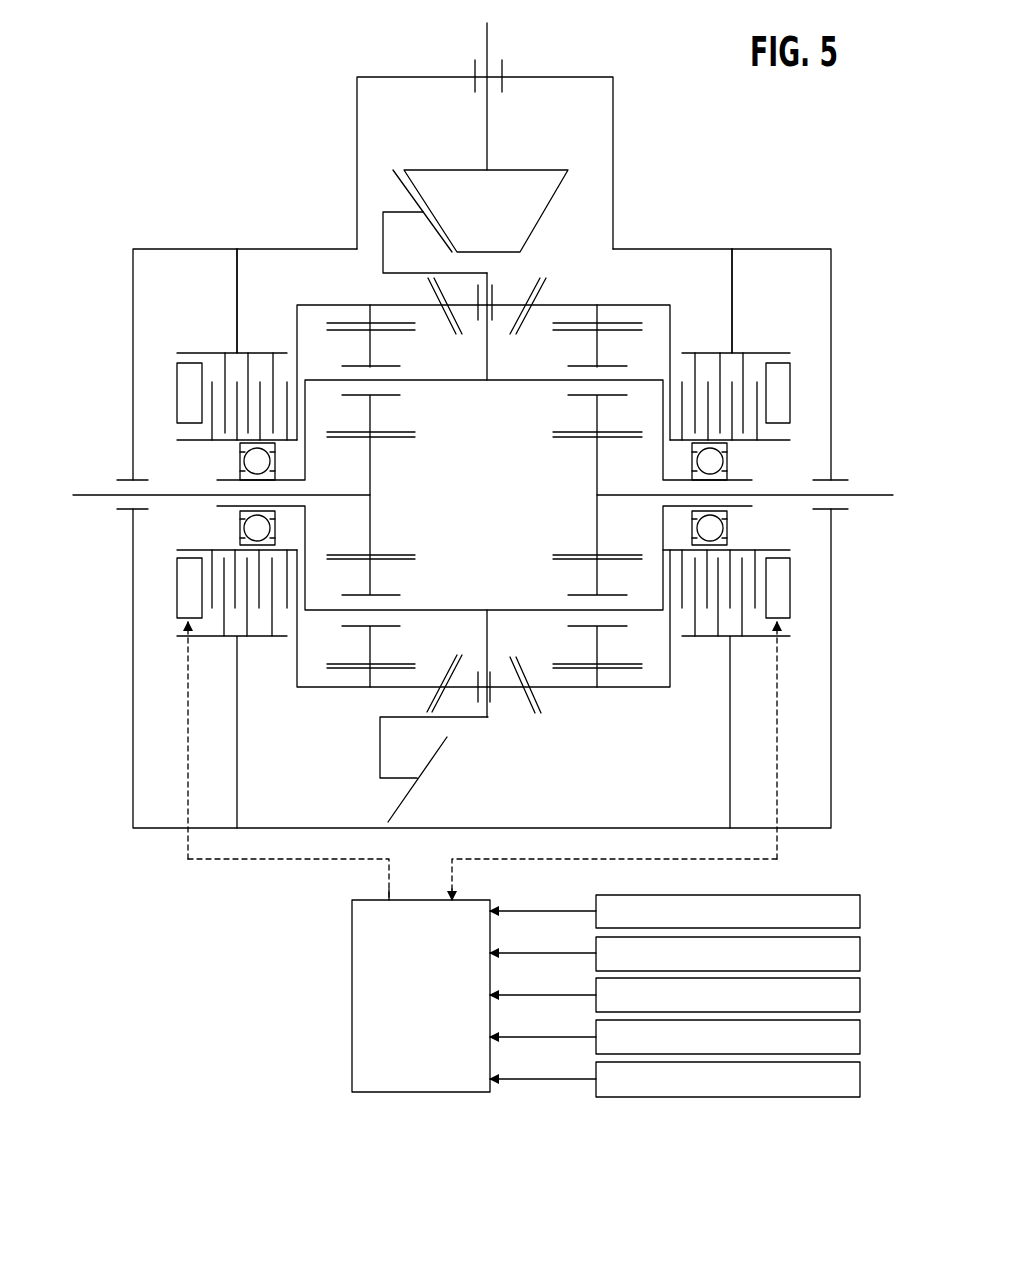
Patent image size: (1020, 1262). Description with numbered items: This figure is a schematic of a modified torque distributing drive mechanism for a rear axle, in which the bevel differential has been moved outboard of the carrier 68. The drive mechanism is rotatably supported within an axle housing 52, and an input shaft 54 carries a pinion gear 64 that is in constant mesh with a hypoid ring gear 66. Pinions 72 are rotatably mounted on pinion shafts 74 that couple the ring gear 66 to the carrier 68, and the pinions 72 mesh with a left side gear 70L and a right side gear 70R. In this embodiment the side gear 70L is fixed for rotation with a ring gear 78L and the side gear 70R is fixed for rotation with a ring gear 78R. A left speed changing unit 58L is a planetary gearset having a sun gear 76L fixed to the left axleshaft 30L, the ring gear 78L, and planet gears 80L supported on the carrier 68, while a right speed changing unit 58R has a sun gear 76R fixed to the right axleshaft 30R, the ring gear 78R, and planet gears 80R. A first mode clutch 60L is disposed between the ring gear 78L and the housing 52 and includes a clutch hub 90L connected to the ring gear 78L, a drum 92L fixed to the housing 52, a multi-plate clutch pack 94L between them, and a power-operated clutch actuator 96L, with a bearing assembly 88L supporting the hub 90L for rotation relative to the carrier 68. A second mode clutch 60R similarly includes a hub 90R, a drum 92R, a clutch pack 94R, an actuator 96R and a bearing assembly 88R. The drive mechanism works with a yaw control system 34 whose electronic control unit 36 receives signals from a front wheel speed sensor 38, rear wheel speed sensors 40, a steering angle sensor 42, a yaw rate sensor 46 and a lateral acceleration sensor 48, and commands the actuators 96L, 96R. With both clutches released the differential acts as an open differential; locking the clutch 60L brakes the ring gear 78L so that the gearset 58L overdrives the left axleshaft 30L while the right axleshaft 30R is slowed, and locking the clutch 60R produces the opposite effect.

The left axleshaft 30L is at (83, 493).
The right axleshaft 30R is at (870, 493).
The yaw control system 34 is at (310, 1053).
The electronic control unit 36 is at (365, 928).
The front wheel speed sensor 38 is at (857, 908).
The rear wheel speed sensor 40 is at (857, 950).
The steering angle sensor 42 is at (857, 992).
The yaw rate sensor 46 is at (857, 1034).
The lateral acceleration sensor 48 is at (857, 1077).
The axle housing 52 is at (831, 283).
The input shaft 54 is at (488, 114).
The left speed changing unit 58L is at (340, 672).
The right speed changing unit 58R is at (633, 672).
The first mode clutch 60L is at (170, 392).
The second mode clutch 60R is at (798, 392).
The pinion gear 64 is at (524, 212).
The hypoid ring gear 66 is at (436, 760).
The carrier 68 is at (505, 610).
The left side gear 70L is at (462, 322).
The right side gear 70R is at (520, 322).
The pinion gears 72 is at (470, 318).
The pinion shafts 74 is at (490, 347).
The left sun gear 76L is at (372, 462).
The right sun gear 76R is at (597, 460).
The left ring gear 78L is at (322, 305).
The right ring gear 78R is at (632, 305).
The left planet gears 80L is at (372, 347).
The right planet gears 80R is at (597, 420).
The bearing assembly 88L is at (240, 530).
The bearing assembly 88R is at (727, 528).
The clutch hub 90L is at (197, 440).
The clutch hub 90R is at (757, 440).
The drum 92L is at (258, 353).
The drum 92R is at (733, 305).
The multi-plate clutch pack 94L is at (255, 620).
The multi-plate clutch pack 94R is at (710, 620).
The power-operated clutch actuator 96L is at (185, 588).
The power-operated clutch actuator 96R is at (780, 590).